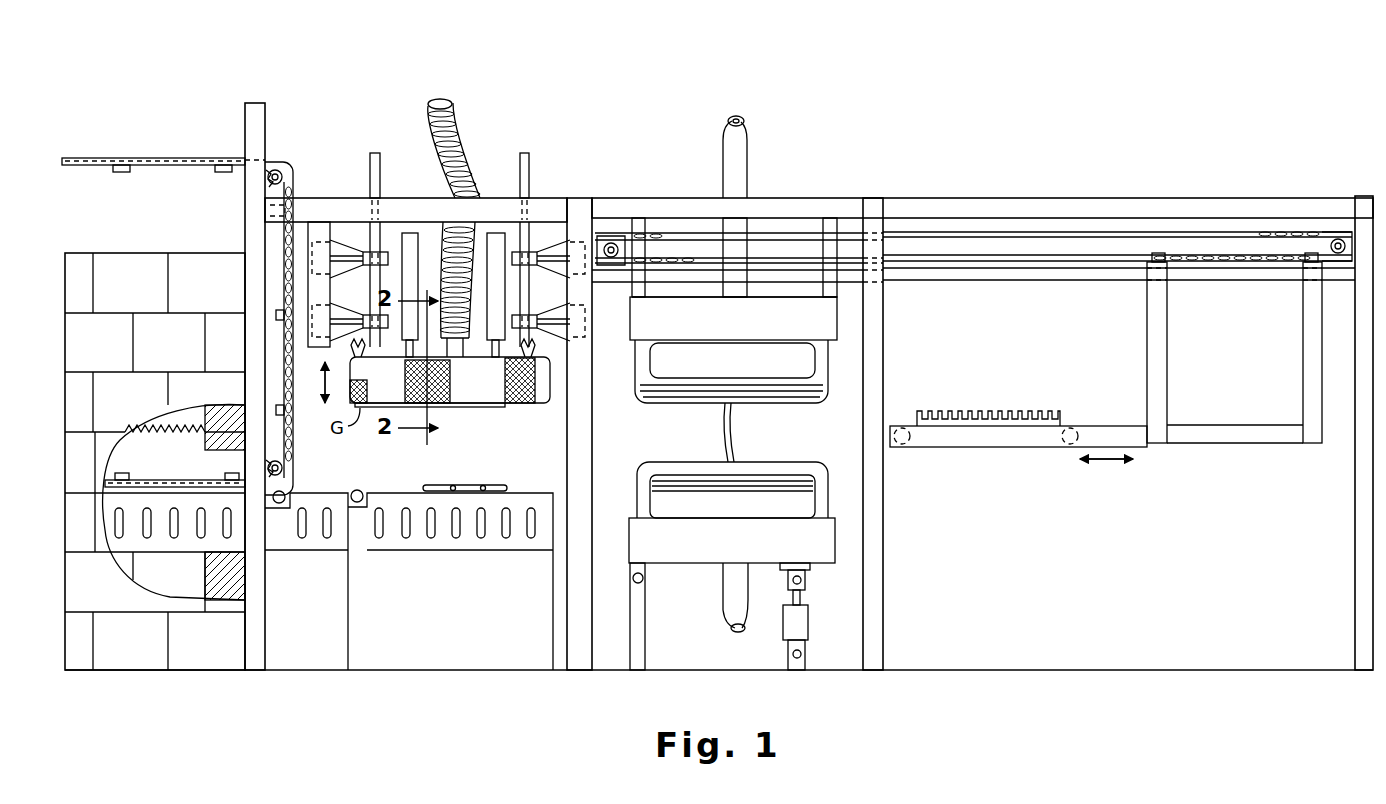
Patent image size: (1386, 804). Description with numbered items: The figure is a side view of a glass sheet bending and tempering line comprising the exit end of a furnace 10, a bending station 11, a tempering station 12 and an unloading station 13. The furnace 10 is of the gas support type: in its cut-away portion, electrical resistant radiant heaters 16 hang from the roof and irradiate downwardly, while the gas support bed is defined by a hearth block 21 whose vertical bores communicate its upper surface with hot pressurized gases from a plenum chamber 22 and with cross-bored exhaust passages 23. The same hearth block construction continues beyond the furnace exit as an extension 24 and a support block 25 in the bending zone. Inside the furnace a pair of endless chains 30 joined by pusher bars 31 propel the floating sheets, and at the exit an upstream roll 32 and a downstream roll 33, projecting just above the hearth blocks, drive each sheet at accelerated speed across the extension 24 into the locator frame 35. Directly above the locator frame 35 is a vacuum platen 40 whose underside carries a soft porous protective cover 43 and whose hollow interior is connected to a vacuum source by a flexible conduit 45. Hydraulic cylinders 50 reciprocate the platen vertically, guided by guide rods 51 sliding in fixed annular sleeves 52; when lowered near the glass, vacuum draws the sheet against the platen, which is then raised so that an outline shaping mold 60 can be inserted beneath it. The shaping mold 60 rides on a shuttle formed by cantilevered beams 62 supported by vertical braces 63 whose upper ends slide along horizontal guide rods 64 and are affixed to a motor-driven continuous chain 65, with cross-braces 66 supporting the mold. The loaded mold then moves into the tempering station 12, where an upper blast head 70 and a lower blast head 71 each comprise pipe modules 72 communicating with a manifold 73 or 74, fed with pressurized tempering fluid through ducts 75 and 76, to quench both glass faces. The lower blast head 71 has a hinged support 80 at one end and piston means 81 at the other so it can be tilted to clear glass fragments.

The furnace 10 is at (165, 116).
The bending station 11 is at (437, 76).
The tempering station 12 is at (733, 100).
The unloading station 13 is at (1120, 158).
The electrical resistant radiant heaters 16 is at (160, 425).
The hearth block 21 is at (188, 552).
The plenum chamber 22 is at (147, 578).
The exhaust passages 23 is at (430, 540).
The extension 24 is at (308, 550).
The support block 25 is at (522, 492).
The endless chains 30 is at (195, 483).
The pusher bars 31 is at (232, 473).
The upstream roll 32 is at (287, 495).
The downstream roll 33 is at (355, 490).
The locator frame 35 is at (441, 484).
The vacuum platen 40 is at (522, 410).
The protective cover 43 is at (538, 400).
The flexible conduit 45 is at (472, 138).
The hydraulic cylinders 50 is at (490, 262).
The guide rods 51 is at (373, 286).
The annular sleeves 52 is at (370, 252).
The outline shaping mold 60 is at (1060, 412).
The cantilevered beams 62 is at (986, 447).
The vertical braces 63 is at (1303, 347).
The horizontal guide rods 64 is at (985, 282).
The continuous chain 65 is at (1290, 232).
The cross-braces 66 is at (913, 447).
The upper blast head 70 is at (665, 406).
The lower blast head 71 is at (668, 456).
The pipe modules 72 is at (735, 425).
The manifold 73 is at (750, 340).
The manifold 74 is at (752, 520).
The duct 75 is at (752, 168).
The duct 76 is at (723, 612).
The hinged support 80 is at (646, 578).
The piston means 81 is at (808, 618).